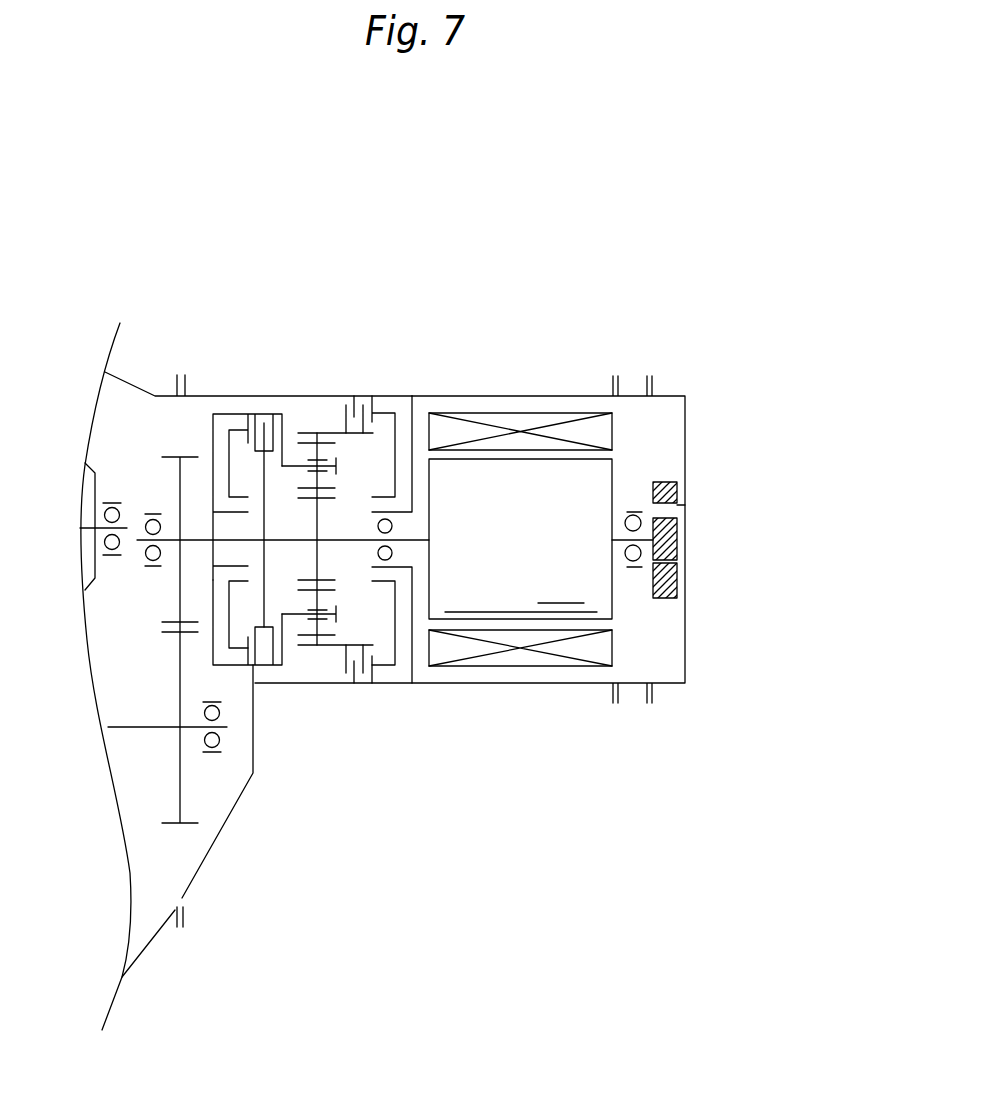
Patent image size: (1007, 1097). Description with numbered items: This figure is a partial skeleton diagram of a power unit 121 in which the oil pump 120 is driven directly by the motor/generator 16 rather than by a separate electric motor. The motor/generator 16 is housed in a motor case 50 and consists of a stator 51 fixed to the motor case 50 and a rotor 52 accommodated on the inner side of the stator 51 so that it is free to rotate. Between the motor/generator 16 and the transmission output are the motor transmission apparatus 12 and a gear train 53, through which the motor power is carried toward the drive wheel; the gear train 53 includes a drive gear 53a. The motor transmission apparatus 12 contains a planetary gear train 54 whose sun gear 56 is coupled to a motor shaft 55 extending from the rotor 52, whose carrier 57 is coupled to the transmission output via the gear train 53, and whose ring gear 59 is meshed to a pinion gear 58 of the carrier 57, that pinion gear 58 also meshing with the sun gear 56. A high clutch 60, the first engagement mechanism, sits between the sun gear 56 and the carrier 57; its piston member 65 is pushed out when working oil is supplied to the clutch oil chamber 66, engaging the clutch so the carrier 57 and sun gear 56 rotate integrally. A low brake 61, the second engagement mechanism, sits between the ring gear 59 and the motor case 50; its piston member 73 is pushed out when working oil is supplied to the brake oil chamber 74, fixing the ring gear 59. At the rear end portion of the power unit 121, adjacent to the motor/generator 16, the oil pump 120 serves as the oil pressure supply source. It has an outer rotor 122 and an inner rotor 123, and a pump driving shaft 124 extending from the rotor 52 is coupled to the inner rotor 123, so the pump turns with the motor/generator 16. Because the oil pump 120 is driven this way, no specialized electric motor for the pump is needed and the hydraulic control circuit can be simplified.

The motor transmission apparatus 12 is at (207, 388).
The motor/generator 16 is at (559, 454).
The motor case 50 is at (525, 395).
The stator 51 is at (573, 430).
The rotor 52 is at (578, 510).
The gear train 53 is at (173, 862).
The drive gear 53a is at (170, 455).
The planetary gear train 54 is at (306, 395).
The motor shaft 55 is at (413, 537).
The sun gear 56 is at (327, 566).
The carrier 57 is at (282, 632).
The pinion gear 58 is at (325, 648).
The ring gear 59 is at (326, 428).
The high clutch 60 is at (250, 394).
The low brake 61 is at (365, 375).
The piston member 65 is at (238, 650).
The clutch oil chamber 66 is at (220, 650).
The piston member 73 is at (387, 668).
The brake oil chamber 74 is at (405, 643).
The oil pump 120 is at (730, 546).
The power unit 121 is at (514, 262).
The outer rotor 122 is at (678, 534).
The inner rotor 123 is at (678, 592).
The pump driving shaft 124 is at (620, 545).